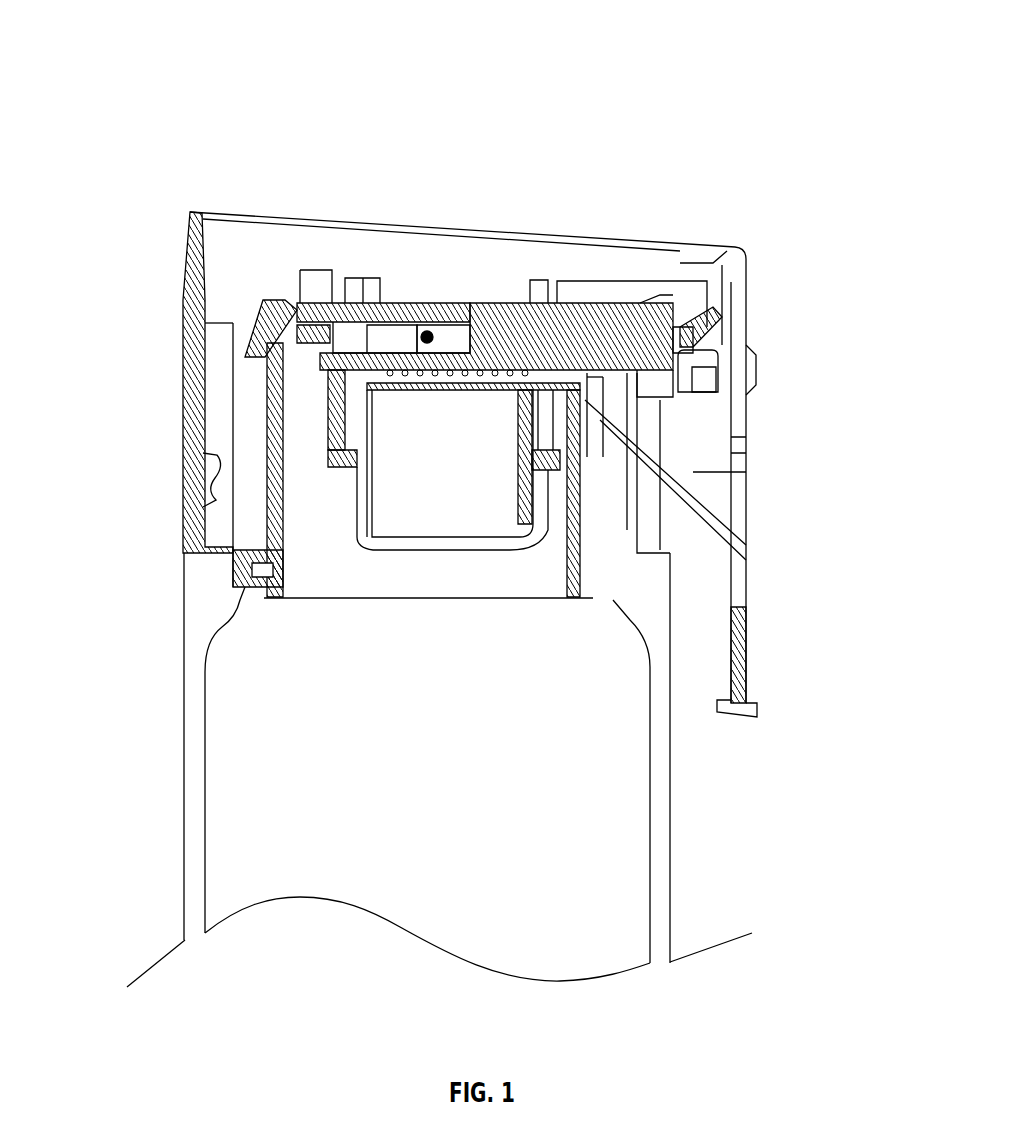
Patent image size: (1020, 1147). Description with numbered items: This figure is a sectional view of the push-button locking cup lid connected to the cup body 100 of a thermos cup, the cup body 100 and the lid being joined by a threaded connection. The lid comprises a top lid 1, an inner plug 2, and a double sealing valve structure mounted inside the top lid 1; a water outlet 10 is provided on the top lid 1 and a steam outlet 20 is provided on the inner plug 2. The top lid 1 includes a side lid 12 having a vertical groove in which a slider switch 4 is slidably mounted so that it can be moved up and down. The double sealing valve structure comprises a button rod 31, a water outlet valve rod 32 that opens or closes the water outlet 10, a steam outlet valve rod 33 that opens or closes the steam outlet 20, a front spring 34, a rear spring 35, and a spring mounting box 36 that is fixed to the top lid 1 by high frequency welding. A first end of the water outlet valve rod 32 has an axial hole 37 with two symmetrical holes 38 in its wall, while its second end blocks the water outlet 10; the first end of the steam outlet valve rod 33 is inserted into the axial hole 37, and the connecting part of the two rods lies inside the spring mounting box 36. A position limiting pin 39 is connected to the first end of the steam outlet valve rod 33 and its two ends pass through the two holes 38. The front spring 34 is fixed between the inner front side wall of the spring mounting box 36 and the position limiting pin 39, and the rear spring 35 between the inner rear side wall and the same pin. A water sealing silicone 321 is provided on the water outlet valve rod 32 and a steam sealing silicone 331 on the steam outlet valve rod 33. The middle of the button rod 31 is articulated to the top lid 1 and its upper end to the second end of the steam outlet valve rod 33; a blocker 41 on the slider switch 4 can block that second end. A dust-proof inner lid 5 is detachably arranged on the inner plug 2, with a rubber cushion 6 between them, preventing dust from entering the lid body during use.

The top lid 1 is at (190, 211).
The water outlet 10 is at (248, 318).
The side lid 12 is at (742, 250).
The inner plug 2 is at (267, 524).
The steam outlet 20 is at (592, 408).
The button rod 31 is at (748, 492).
The water outlet valve rod 32 is at (313, 300).
The water sealing silicone 321 is at (274, 295).
The steam outlet valve rod 33 is at (625, 297).
The steam sealing silicone 331 is at (645, 402).
The front spring 34 is at (398, 293).
The rear spring 35 is at (480, 310).
The spring mounting box 36 is at (371, 277).
The axial hole 37 is at (413, 318).
The holes 38 is at (530, 280).
The position limiting pin 39 is at (443, 318).
The slider switch 4 is at (752, 358).
The blocker 41 is at (705, 320).
The dust-proof inner lid 5 is at (353, 505).
The rubber cushion 6 is at (327, 457).
The cup body 100 is at (185, 718).